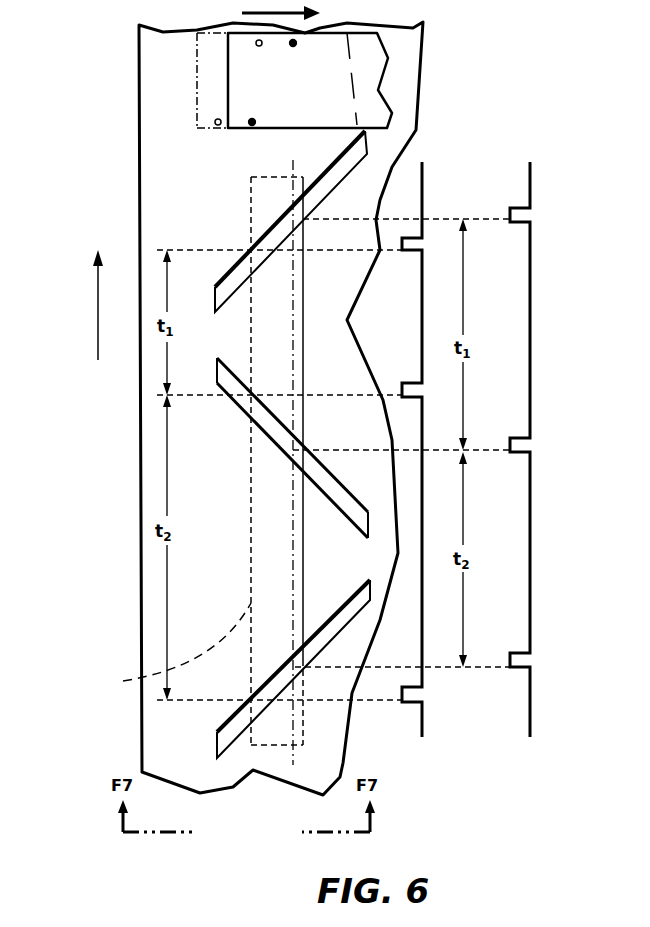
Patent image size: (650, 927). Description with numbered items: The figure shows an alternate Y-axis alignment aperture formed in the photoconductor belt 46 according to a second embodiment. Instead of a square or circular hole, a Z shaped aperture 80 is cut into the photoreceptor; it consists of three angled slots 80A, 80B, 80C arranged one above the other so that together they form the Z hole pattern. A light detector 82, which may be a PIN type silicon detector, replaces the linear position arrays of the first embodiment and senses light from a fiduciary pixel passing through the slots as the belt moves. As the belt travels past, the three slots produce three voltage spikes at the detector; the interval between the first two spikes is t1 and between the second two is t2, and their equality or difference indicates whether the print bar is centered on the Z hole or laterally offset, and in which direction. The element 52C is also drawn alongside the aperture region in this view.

The belt 46 is at (148, 624).
The mounting plate 52C is at (291, 45).
The Z shaped aperture 80 is at (219, 444).
The angled slot 80A is at (273, 228).
The angled slot 80B is at (243, 409).
The angled slot 80C is at (225, 734).
The light detector 82 is at (169, 648).